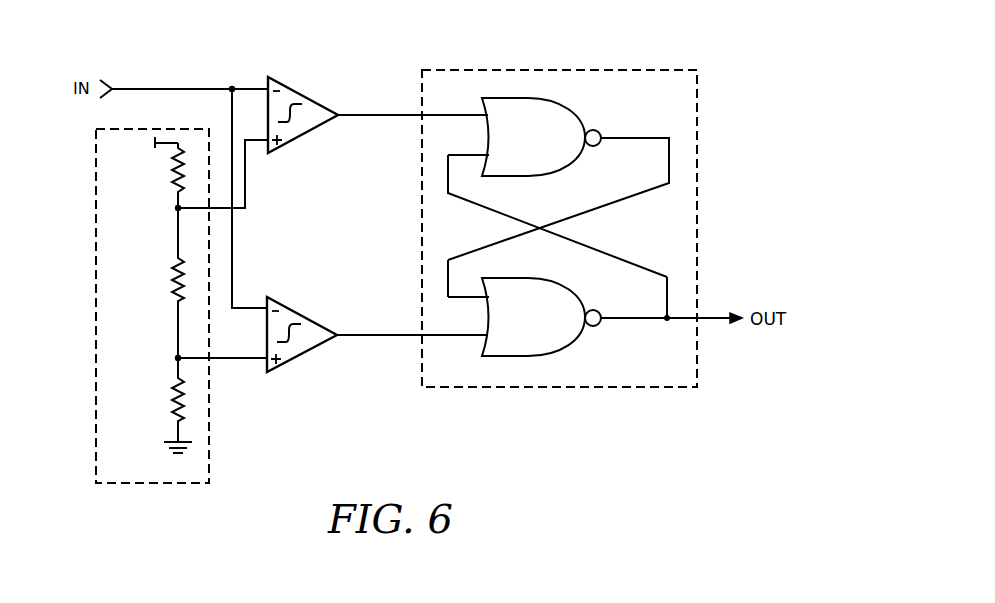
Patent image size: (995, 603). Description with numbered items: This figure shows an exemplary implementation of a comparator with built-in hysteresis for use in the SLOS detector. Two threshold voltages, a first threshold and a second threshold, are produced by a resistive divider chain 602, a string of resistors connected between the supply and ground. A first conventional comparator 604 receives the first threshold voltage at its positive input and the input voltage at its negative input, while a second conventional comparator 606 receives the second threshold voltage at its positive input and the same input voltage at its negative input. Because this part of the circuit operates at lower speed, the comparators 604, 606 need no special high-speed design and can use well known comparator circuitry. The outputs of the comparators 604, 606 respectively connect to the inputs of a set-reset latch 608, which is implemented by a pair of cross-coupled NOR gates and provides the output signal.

The resistive divider chain 602 is at (96, 307).
The first conventional comparator 604 is at (300, 93).
The second conventional comparator 606 is at (299, 313).
The set-reset latch 608 is at (560, 70).